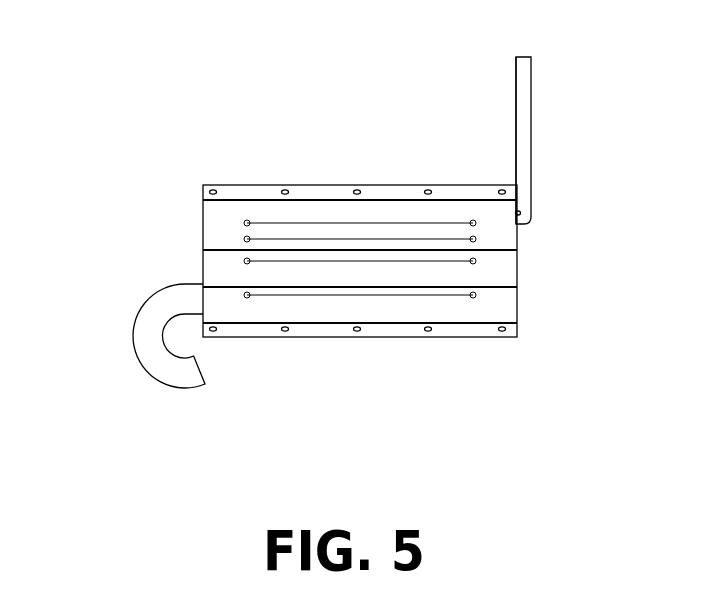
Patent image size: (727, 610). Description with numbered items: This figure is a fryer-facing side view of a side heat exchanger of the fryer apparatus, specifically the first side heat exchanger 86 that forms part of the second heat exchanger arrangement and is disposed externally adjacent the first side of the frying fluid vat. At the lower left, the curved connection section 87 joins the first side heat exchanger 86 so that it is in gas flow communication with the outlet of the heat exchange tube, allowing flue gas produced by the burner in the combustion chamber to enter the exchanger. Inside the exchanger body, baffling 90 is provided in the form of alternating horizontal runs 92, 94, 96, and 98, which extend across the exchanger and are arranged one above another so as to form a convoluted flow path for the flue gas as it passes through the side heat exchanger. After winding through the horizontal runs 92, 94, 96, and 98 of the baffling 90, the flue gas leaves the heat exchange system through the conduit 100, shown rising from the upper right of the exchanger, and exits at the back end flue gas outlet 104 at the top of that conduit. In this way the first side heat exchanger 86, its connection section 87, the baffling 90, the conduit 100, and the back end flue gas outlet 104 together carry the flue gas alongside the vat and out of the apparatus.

The first side heat exchanger 86 is at (253, 189).
The connection section 87 is at (160, 355).
The baffling 90 is at (208, 240).
The horizontal run 92 is at (292, 293).
The horizontal run 94 is at (497, 275).
The horizontal run 96 is at (357, 252).
The horizontal run 98 is at (392, 235).
The conduit 100 is at (518, 137).
The back end flue gas outlet 104 is at (522, 56).